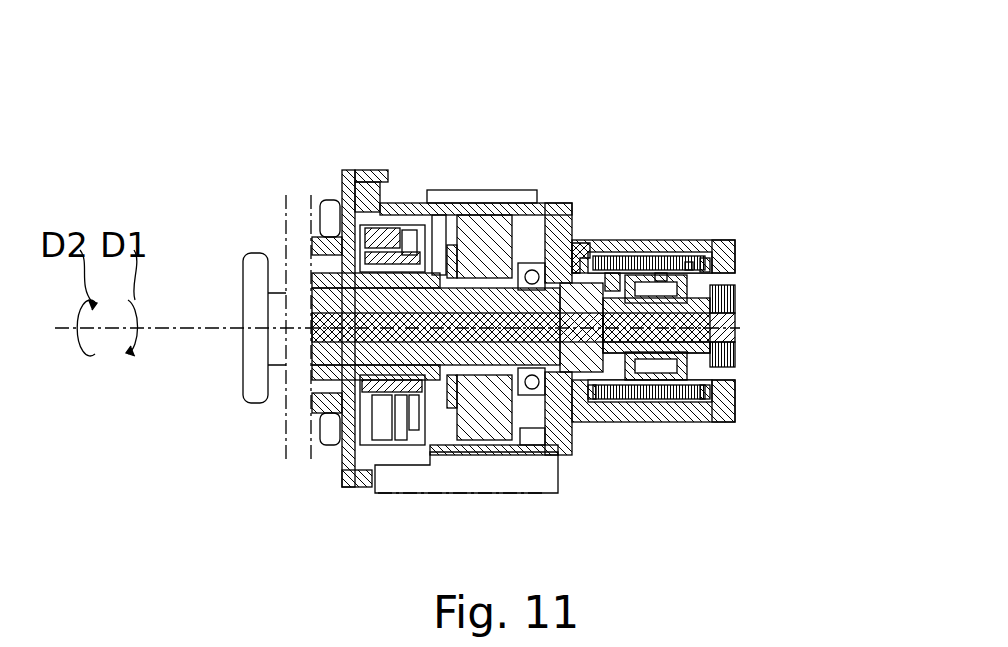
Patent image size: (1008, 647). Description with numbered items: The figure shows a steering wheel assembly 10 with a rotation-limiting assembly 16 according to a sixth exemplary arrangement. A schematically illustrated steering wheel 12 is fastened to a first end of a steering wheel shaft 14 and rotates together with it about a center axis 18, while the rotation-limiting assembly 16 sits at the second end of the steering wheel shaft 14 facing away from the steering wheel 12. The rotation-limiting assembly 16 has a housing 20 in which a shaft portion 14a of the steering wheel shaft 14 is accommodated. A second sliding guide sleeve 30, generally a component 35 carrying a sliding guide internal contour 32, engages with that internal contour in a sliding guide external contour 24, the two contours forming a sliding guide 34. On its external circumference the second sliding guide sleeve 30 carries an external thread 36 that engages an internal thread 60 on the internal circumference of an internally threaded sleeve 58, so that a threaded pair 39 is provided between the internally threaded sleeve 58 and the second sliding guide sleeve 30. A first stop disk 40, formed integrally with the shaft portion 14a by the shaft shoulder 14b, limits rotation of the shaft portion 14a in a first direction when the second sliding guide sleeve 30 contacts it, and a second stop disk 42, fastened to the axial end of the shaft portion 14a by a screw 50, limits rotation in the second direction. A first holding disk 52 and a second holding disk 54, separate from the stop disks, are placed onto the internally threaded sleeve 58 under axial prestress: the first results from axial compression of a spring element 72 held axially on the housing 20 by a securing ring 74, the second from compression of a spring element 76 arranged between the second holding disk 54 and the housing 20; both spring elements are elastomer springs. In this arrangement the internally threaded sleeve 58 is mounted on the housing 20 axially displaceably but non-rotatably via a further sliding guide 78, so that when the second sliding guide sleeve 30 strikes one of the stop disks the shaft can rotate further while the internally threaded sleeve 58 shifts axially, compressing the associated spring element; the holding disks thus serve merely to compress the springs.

The steering wheel assembly 10 is at (751, 122).
The steering wheel 12 is at (255, 253).
The steering wheel shaft 14 is at (276, 293).
The shaft portion 14a is at (737, 340).
The shaft shoulder 14b is at (553, 277).
The rotation-limiting assembly 16 is at (790, 141).
The center axis 18 is at (207, 328).
The housing 20 is at (722, 422).
The sliding guide external contour 24 is at (737, 300).
The second sliding guide sleeve 30 is at (717, 285).
The component carrying the sliding guide internal contour 35 is at (656, 366).
The sliding guide internal contour 32 is at (735, 388).
The sliding guide 34 is at (650, 422).
The external thread 36 is at (668, 252).
The threaded pair 39 is at (681, 252).
The first stop disk 40 is at (540, 432).
The second stop disk 42 is at (737, 355).
The screw 50 is at (737, 332).
The first holding disk 52 is at (585, 422).
The second holding disk 54 is at (707, 422).
The internally threaded sleeve 58 is at (698, 252).
The internal thread 60 is at (605, 252).
The spring element 72 is at (585, 242).
The securing ring 74 is at (560, 258).
The spring element 76 is at (735, 262).
The further sliding guide 78 is at (648, 252).